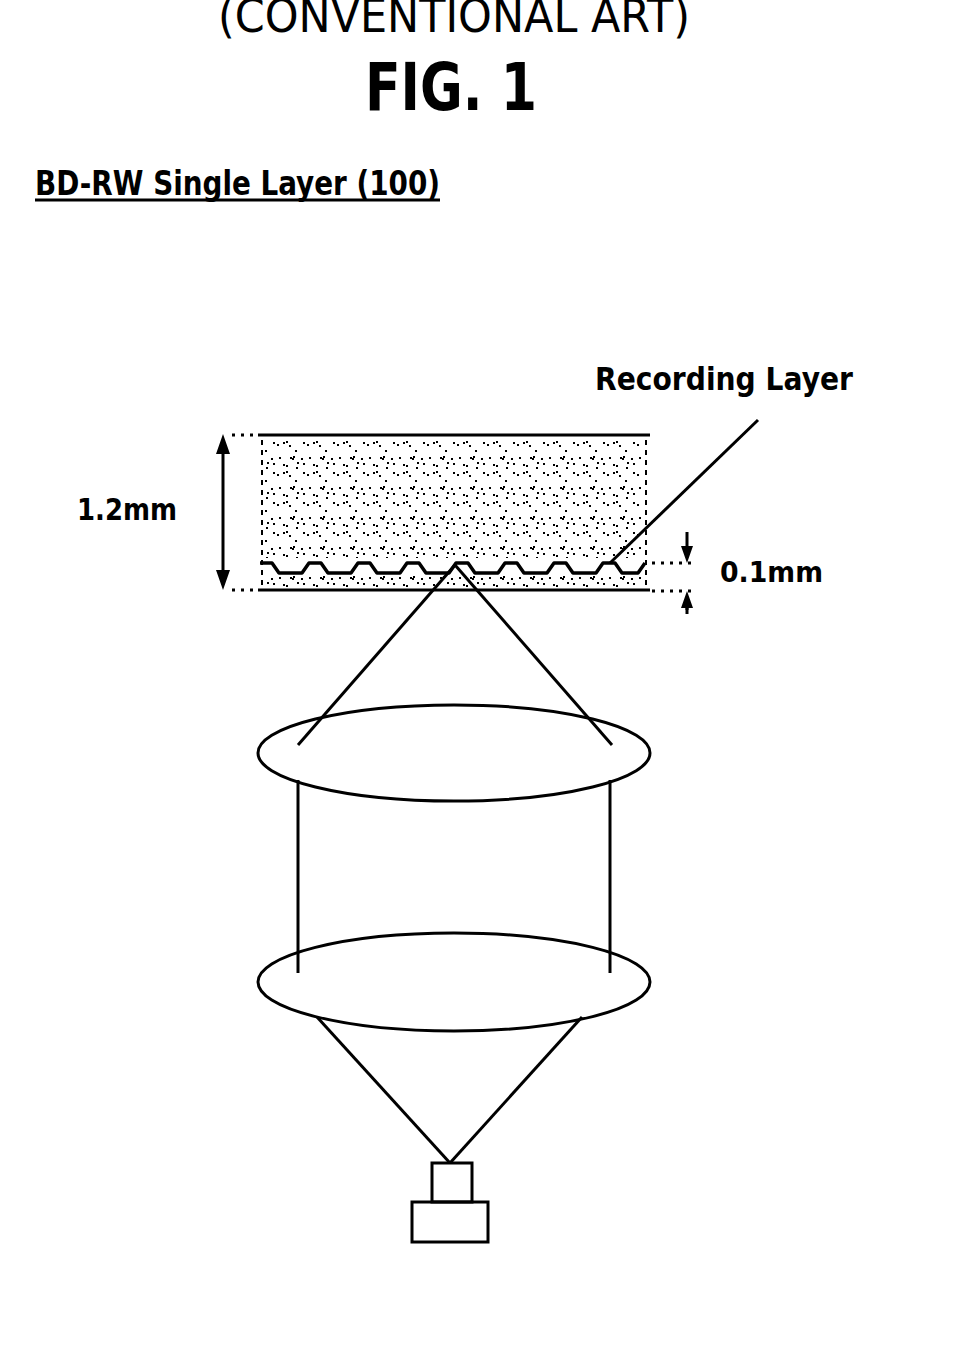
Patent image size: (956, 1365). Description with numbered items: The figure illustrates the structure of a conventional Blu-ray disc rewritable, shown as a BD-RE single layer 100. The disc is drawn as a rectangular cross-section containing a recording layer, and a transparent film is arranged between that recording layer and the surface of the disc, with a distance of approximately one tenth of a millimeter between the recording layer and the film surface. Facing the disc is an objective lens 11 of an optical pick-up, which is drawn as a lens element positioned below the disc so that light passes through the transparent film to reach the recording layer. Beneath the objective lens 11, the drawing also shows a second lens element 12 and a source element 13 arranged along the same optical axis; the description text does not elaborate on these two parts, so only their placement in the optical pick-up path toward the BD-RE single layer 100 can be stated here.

The BD-RE single layer 100 is at (360, 460).
The objective lens 11 is at (280, 743).
The collimating lens (CL) 12 is at (280, 972).
The laser diode (LD) 13 is at (475, 1222).